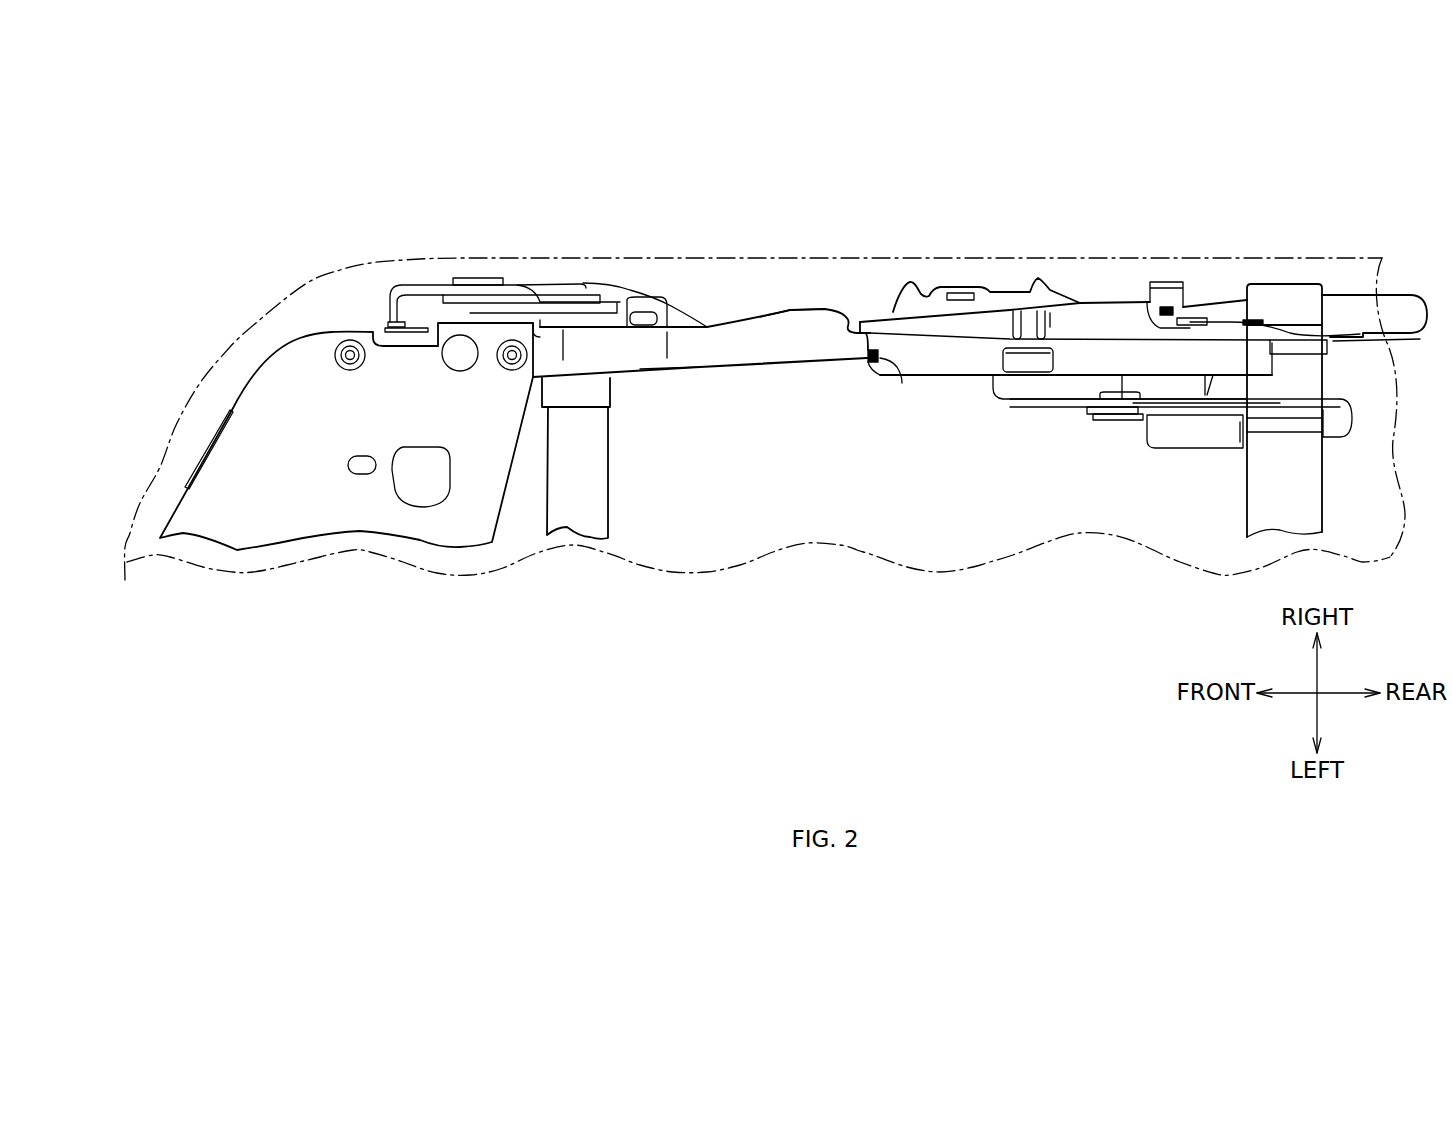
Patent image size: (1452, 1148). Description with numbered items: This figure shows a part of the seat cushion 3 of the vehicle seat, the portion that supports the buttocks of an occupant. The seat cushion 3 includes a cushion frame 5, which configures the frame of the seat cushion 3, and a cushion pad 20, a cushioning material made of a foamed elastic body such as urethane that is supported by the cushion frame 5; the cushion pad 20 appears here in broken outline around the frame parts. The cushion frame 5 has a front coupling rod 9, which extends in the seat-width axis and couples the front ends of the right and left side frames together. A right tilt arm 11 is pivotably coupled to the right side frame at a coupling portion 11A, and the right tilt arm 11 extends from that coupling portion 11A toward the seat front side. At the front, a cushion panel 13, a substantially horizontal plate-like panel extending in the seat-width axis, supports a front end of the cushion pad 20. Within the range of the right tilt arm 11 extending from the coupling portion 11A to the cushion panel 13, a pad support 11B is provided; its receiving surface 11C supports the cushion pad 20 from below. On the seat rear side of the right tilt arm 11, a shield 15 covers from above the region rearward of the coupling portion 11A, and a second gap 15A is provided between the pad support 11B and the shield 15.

The seat cushion 3 is at (720, 258).
The cushion frame 5 is at (990, 277).
The front coupling rod 9 is at (613, 488).
The right tilt arm 11 is at (727, 370).
The coupling portion 11A is at (869, 375).
The pad support 11B is at (805, 332).
The receiving surface 11C is at (694, 357).
The cushion panel 13 is at (297, 340).
The shield 15 is at (950, 378).
The second gap 15A is at (902, 383).
The cushion pad 20 is at (850, 550).